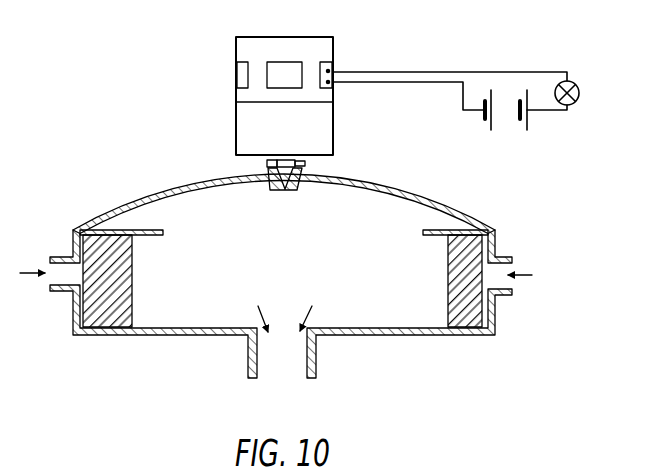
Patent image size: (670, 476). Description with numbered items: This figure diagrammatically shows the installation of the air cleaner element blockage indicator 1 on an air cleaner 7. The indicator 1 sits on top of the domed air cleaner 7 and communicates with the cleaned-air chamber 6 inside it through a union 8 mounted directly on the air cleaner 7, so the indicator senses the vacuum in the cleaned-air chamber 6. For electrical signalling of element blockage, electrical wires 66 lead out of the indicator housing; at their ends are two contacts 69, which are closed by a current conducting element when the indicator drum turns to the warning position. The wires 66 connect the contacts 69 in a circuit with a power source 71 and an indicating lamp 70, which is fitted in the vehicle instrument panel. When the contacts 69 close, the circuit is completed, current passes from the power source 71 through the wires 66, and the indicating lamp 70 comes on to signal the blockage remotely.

The air cleaner element blockage indicator 1 is at (333, 131).
The cleaned-air chamber 6 is at (372, 329).
The air cleaner 7 is at (425, 196).
The union 8 is at (305, 164).
The electrical wires 66 is at (414, 72).
The contacts 69 is at (333, 72).
The indicating lamp 70 is at (574, 82).
The power source 71 is at (484, 122).